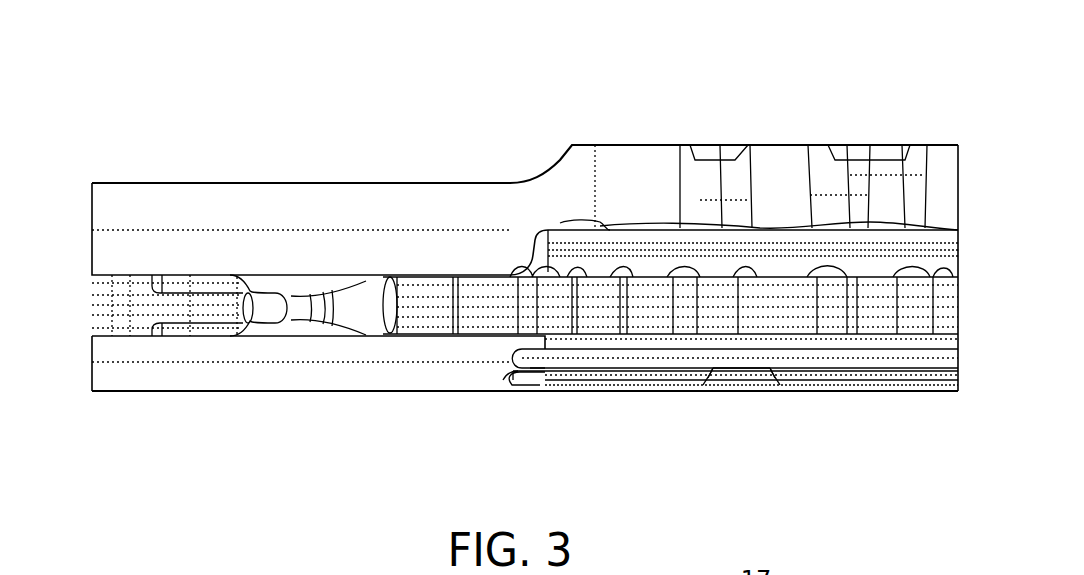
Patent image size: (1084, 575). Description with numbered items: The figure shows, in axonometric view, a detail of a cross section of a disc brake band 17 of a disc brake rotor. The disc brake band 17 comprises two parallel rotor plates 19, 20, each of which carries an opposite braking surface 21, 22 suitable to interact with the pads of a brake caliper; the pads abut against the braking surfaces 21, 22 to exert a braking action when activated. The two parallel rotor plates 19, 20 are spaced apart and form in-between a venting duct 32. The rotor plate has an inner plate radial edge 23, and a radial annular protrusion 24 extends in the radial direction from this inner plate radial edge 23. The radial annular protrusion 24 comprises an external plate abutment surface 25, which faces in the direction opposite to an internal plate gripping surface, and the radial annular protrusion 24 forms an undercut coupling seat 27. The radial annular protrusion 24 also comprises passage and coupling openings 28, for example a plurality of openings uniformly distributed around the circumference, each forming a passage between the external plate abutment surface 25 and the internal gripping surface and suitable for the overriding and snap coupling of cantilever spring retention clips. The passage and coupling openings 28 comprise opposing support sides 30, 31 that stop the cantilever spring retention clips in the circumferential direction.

The disc brake band 17 is at (472, 134).
The rotor plate 19 is at (380, 215).
The braking surface 21 is at (200, 180).
The venting duct 32 is at (133, 309).
The rotor plate 20 is at (355, 368).
The braking surface 22 is at (238, 393).
The radial annular protrusion 24 is at (527, 374).
The inner plate radial edge 23 is at (538, 384).
The external plate abutment surface 25 is at (563, 376).
The undercut coupling seat 27 is at (578, 355).
The support side 31 is at (722, 371).
The passage and coupling openings 28 is at (742, 387).
The support side 30 is at (762, 380).